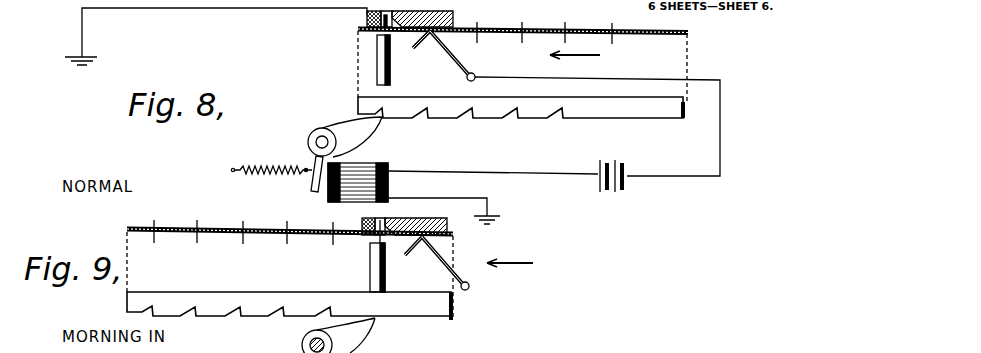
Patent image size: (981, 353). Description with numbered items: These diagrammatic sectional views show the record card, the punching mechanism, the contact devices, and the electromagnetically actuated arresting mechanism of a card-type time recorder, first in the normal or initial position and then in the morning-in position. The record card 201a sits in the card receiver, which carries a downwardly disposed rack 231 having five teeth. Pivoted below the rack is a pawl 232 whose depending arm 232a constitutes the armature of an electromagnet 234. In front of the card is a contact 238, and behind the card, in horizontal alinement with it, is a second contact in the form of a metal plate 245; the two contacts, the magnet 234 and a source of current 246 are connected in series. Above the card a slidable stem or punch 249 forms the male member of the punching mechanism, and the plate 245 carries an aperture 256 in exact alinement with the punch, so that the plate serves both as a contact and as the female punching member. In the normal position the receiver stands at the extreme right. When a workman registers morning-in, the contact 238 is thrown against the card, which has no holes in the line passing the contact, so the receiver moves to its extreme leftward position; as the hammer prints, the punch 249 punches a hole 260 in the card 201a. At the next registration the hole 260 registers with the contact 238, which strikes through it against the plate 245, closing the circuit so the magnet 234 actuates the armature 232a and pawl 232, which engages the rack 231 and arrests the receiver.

In FIG. 8, the record card 201a is at (643, 34).
In FIG. 8, the metal plate contact 245 is at (367, 19).
In FIG. 9, the metal plate contact 245 is at (367, 335).
In FIG. 8, the punch stem 249 is at (342, 46).
In FIG. 8, the aperture 256 is at (396, 29).
In FIG. 8, the contact 238 is at (462, 61).
In FIG. 8, the rack 231 is at (358, 101).
In FIG. 8, the source of current 246 is at (612, 185).
In FIG. 8, the electromagnet 234 is at (323, 198).
In FIG. 8, the pawl 232 is at (368, 135).
In FIG. 8, the depending arm 232a is at (311, 164).
In FIG. 9, the hole 260 is at (375, 238).